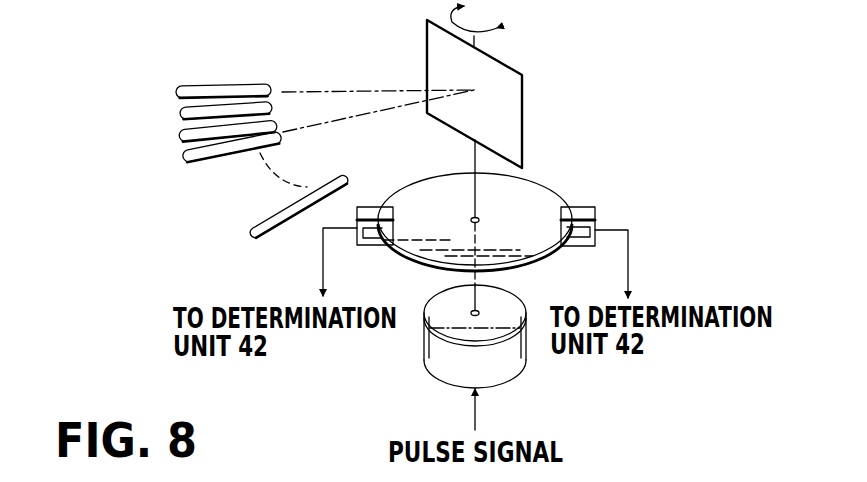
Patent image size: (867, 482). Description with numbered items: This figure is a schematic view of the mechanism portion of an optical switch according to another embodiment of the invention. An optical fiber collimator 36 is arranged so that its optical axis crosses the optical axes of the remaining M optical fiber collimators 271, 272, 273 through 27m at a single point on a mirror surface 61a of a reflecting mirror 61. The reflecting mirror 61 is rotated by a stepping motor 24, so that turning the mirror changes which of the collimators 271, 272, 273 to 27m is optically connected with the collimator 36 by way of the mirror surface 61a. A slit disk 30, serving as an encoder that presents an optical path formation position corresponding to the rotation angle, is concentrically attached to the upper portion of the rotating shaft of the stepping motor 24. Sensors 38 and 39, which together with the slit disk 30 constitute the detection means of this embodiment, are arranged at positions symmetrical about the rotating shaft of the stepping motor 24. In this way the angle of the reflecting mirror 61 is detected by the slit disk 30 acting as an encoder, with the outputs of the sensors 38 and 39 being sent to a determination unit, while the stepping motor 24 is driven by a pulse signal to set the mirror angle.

The optical fiber collimator 36 is at (228, 85).
The optical fiber collimator 271 is at (180, 105).
The optical fiber collimator 272 is at (182, 137).
The optical fiber collimator 273 is at (183, 162).
The optical fiber collimator 27m is at (248, 237).
The reflecting mirror 61 is at (525, 83).
The mirror surface 61a is at (493, 75).
The slit disk 30 is at (550, 180).
The sensor 38 is at (373, 245).
The sensor 39 is at (587, 207).
The stepping motor 24 is at (525, 368).